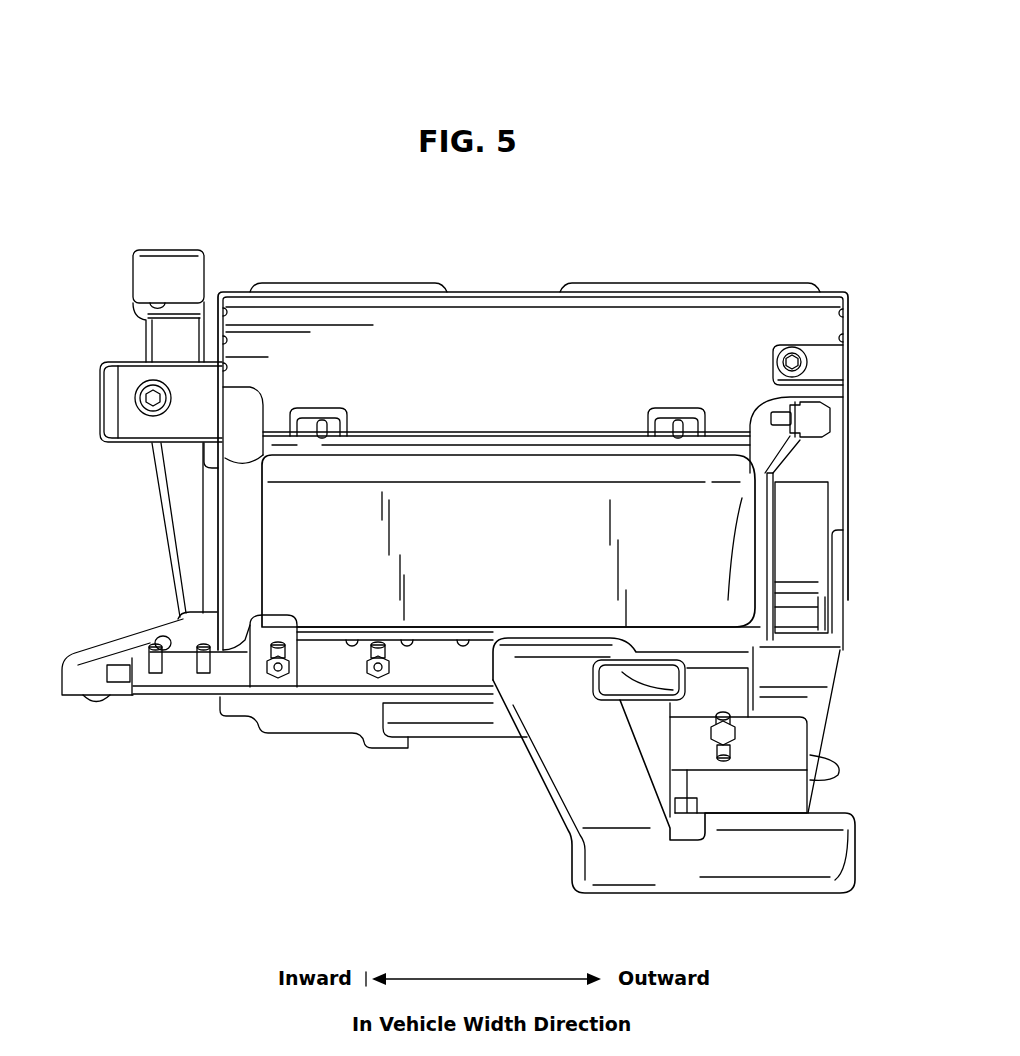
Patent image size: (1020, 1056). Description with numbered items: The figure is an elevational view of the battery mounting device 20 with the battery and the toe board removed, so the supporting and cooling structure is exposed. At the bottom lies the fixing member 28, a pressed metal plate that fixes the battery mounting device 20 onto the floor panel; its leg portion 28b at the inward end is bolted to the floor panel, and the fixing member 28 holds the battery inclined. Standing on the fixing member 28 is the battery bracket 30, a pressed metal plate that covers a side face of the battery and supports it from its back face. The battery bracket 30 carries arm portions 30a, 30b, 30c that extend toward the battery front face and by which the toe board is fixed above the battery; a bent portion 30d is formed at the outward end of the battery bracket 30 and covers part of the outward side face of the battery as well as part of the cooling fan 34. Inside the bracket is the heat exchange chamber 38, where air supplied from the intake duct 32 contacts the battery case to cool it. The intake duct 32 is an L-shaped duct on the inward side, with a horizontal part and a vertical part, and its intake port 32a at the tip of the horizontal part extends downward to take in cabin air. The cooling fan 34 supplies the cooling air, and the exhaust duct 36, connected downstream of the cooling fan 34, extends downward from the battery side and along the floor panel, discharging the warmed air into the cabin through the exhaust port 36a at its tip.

The battery mounting device 20 is at (94, 283).
The fixing member 28 is at (438, 732).
The leg portion 28b is at (76, 683).
The battery bracket 30 is at (792, 274).
The arm portion 30a is at (782, 740).
The arm portion 30b is at (820, 352).
The arm portion 30c is at (136, 432).
The bent portion 30d is at (850, 432).
The intake duct 32 is at (163, 336).
The intake port 32a is at (153, 300).
The cooling fan 34 is at (805, 503).
The exhaust duct 36 is at (550, 794).
The exhaust port 36a is at (603, 700).
The heat exchange chamber 38 is at (584, 492).